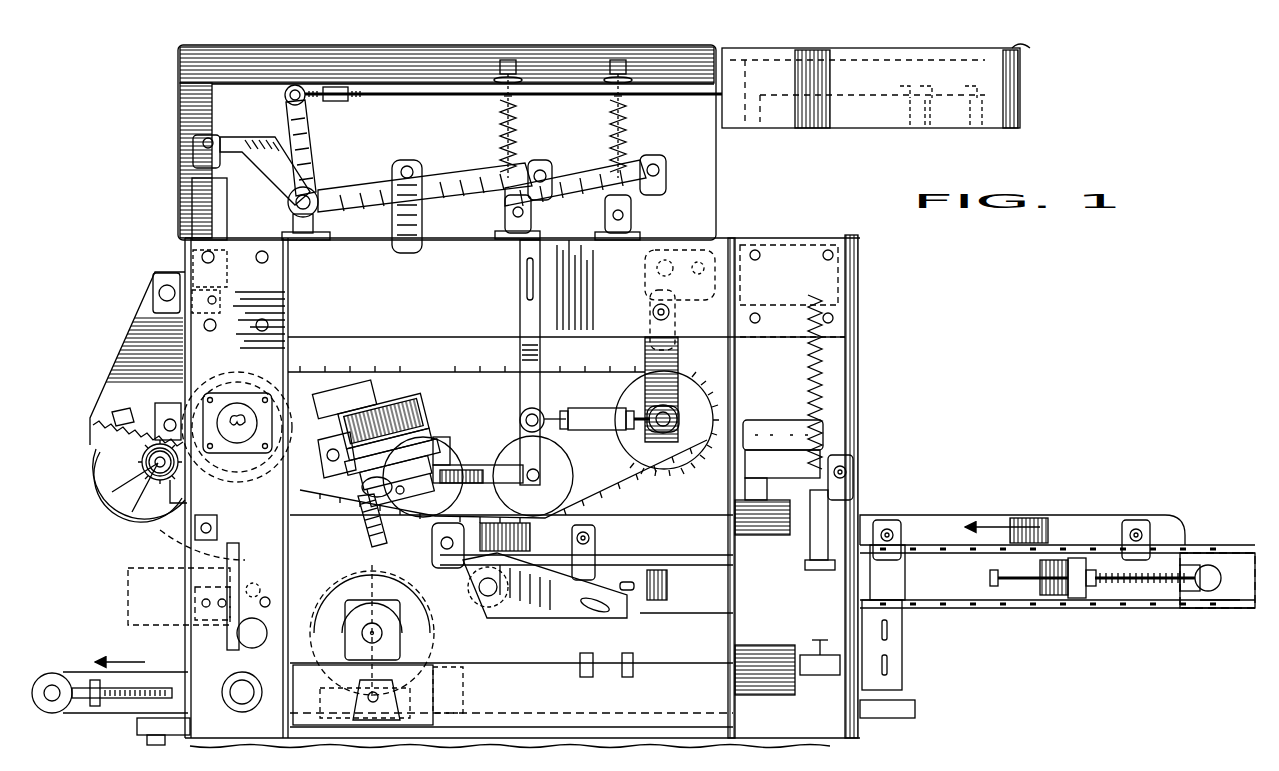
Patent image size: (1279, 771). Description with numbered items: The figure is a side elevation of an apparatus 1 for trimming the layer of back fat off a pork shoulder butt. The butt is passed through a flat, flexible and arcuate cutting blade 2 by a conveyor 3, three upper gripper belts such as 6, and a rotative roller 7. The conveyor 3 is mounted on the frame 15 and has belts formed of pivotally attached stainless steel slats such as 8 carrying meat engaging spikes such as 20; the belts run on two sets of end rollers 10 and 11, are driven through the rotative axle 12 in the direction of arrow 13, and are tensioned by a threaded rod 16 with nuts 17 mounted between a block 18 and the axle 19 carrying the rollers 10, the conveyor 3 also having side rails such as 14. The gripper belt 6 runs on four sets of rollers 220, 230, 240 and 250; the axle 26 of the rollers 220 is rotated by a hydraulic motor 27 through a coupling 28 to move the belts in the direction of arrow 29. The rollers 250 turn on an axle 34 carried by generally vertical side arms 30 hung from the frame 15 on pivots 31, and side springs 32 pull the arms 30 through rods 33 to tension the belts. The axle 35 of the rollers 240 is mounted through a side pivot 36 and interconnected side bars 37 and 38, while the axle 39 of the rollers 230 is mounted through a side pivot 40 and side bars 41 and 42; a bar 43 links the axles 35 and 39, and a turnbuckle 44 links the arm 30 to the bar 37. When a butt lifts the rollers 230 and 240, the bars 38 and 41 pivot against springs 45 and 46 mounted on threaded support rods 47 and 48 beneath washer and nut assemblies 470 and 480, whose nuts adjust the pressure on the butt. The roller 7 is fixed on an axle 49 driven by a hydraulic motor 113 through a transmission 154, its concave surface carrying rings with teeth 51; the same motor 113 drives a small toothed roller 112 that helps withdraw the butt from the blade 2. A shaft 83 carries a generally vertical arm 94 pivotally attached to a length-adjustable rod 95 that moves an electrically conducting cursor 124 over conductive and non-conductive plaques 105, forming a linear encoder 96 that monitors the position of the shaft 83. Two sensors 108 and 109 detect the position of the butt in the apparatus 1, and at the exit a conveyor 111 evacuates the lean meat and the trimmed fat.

The apparatus 1 is at (872, 393).
The cutting blade 2 is at (355, 525).
The conveyor 3 is at (1195, 553).
The upper gripper belt 6 is at (698, 378).
The rotative roller 7 is at (318, 700).
The transverse slat 8 is at (1232, 600).
The end rollers 10 is at (1200, 606).
The end rollers 11 is at (500, 600).
The rotative axle 12 is at (538, 600).
The arrow 13 is at (1000, 521).
The side rail 14 is at (1108, 518).
The frame 15 is at (858, 318).
The threaded rod 16 is at (1135, 596).
The nuts 17 is at (1180, 578).
The block 18 is at (1078, 600).
The axle 19 is at (1215, 570).
The meat engaging spikes 20 is at (1050, 545).
The rotative axle 26 is at (237, 416).
The hydraulic motor 27 is at (258, 424).
The coupling 28 is at (268, 408).
The arrow 29 is at (645, 503).
The side arm 30 is at (644, 354).
The pivot 31 is at (648, 275).
The side spring 32 is at (790, 300).
The rod 33 is at (680, 264).
The axle 34 is at (680, 418).
The axle 35 is at (545, 476).
The side pivot 36 is at (660, 170).
The side bar 37 is at (518, 354).
The side bar 38 is at (568, 182).
The axle 39 is at (430, 490).
The side pivot 40 is at (542, 170).
The side bar 41 is at (452, 186).
The side bar 42 is at (423, 230).
The bar 43 is at (486, 470).
The turnbuckle 44 is at (594, 431).
The spring 45 is at (630, 118).
The spring 46 is at (500, 114).
The vertical support rod 47 is at (632, 136).
The vertical support rod 48 is at (500, 130).
The rotative axle 49 is at (375, 632).
The teeth 51 is at (345, 553).
The shaft 83 is at (289, 202).
The vertical arm 94 is at (308, 132).
The rod 95 is at (375, 95).
The linear encoder 96 is at (1020, 48).
The plaques 105 is at (815, 126).
The sensor 108 is at (850, 504).
The sensor 109 is at (447, 550).
The conveyor 111 is at (92, 712).
The teethed roller 112 is at (288, 536).
The hydraulic motor 113 is at (152, 578).
The cursor 124 is at (925, 118).
The transmission 154 is at (387, 513).
The rollers 220 is at (240, 476).
The rollers 230 is at (452, 448).
The rollers 240 is at (518, 428).
The rollers 250 is at (630, 396).
The washer and nut assembly 470 is at (622, 58).
The washer and nut assembly 480 is at (508, 58).